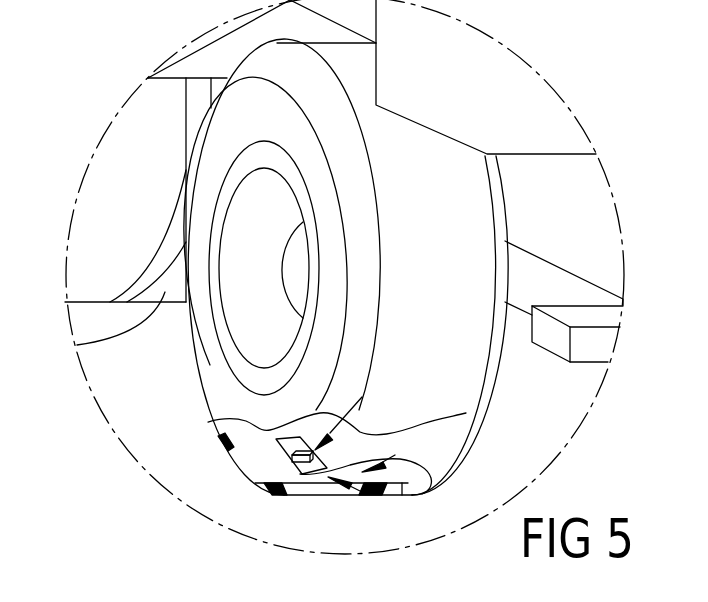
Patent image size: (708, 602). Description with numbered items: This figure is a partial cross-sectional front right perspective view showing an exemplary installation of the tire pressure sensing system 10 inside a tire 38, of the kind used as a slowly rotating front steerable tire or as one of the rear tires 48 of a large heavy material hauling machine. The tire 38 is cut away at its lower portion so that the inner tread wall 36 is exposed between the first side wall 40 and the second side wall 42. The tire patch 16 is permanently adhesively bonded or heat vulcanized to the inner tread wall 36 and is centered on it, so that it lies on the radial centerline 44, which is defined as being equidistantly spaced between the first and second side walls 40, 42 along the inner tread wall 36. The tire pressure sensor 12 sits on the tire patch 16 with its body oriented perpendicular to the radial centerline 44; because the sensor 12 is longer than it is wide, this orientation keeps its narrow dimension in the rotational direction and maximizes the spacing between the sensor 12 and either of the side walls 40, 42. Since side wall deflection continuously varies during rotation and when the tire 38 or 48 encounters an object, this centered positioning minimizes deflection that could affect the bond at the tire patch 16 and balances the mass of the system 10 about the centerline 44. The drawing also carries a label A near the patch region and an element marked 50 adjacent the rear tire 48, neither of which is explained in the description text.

The tire pressure sensing system 10 is at (340, 420).
The tire pressure sensor 12 is at (290, 452).
The tire patch 16 is at (310, 467).
The inner tread wall 36 is at (415, 460).
The tire 38 is at (227, 396).
The first side wall 40 is at (213, 417).
The second side wall 42 is at (448, 434).
The radial centerline 44 is at (318, 477).
The rear tires 48 is at (93, 253).
The mudguard 50 is at (75, 344).
The direction arrow A is at (361, 487).